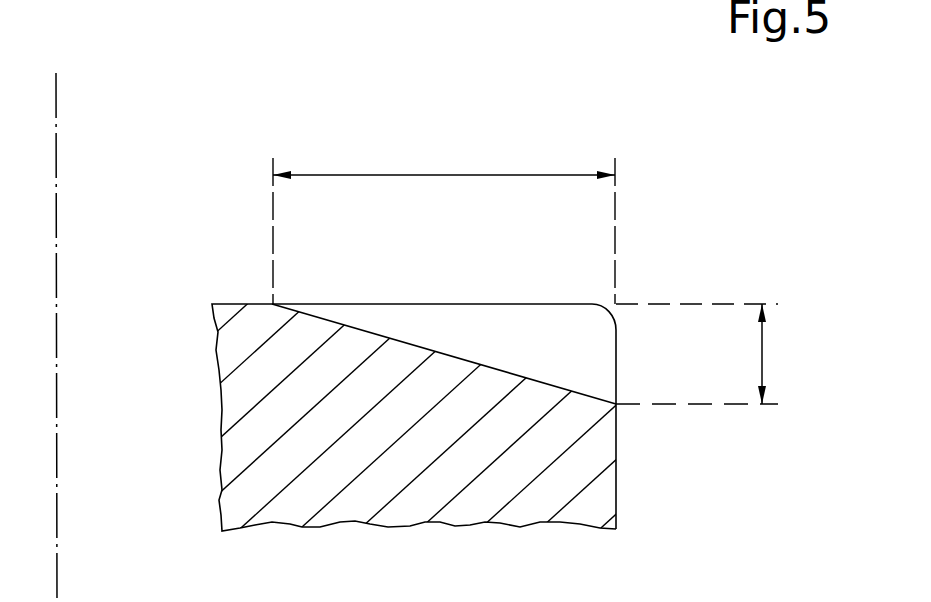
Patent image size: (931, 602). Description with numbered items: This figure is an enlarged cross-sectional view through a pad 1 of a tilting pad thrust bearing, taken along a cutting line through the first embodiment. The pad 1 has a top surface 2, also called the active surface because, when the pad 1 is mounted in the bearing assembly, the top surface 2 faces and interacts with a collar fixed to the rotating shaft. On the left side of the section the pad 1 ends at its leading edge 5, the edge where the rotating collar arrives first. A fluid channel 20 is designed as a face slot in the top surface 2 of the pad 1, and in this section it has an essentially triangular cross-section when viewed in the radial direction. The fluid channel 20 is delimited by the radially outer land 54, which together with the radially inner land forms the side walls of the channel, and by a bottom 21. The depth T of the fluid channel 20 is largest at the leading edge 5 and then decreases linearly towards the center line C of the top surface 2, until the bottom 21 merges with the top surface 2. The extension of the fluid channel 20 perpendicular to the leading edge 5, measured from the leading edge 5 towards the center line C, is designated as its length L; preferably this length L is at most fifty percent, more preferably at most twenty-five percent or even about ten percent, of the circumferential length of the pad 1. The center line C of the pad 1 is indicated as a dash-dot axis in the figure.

The pad 1 is at (556, 90).
The top surface 2 is at (236, 304).
The fluid channel 20 is at (487, 322).
The bottom 21 is at (370, 326).
The leading edge 5 is at (616, 432).
The radially outer land 54 is at (590, 305).
The center line C is at (56, 100).
The length L is at (444, 220).
The depth T is at (699, 354).